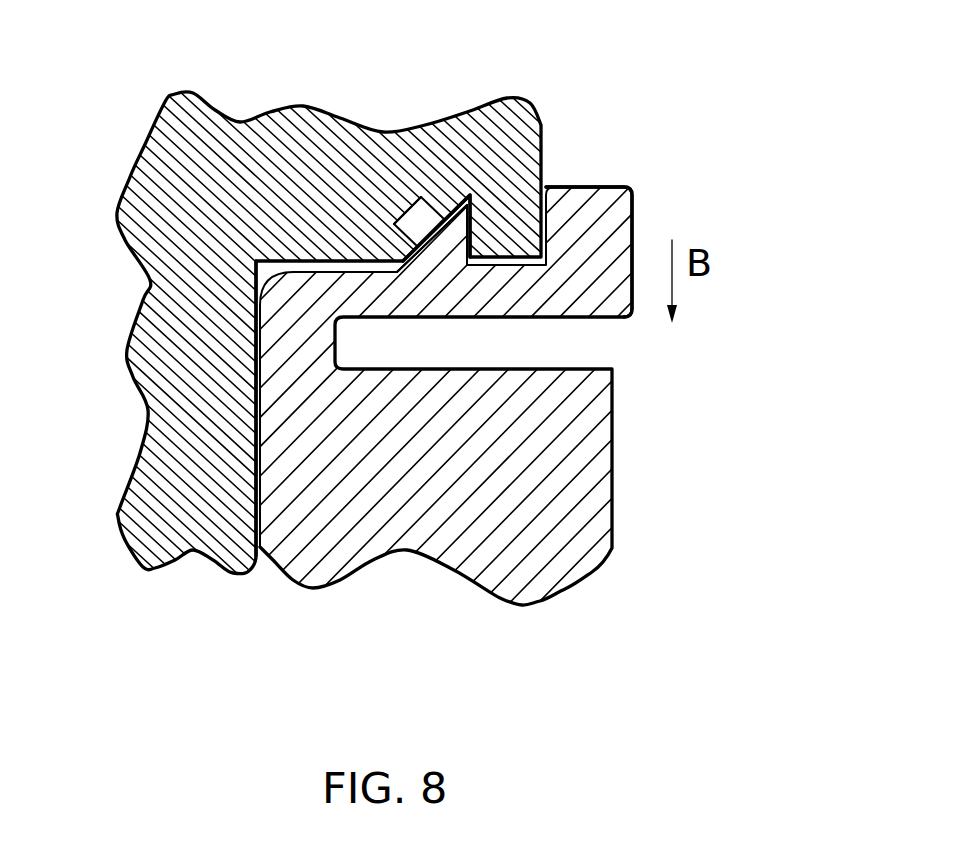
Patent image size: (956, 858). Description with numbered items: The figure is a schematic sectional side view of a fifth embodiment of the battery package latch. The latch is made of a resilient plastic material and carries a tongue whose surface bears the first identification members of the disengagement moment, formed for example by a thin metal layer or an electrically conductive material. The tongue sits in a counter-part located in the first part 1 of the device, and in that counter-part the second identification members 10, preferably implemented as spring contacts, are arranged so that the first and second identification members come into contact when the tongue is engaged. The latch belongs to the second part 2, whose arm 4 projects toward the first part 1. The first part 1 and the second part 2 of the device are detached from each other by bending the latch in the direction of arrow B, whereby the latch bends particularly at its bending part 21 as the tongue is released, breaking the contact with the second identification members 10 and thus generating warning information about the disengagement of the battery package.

The first part 1 is at (158, 185).
The second part 2 is at (483, 553).
The bending part 21 is at (226, 313).
The projecting arm of second part 4 is at (598, 230).
The second identification members 10 is at (424, 200).